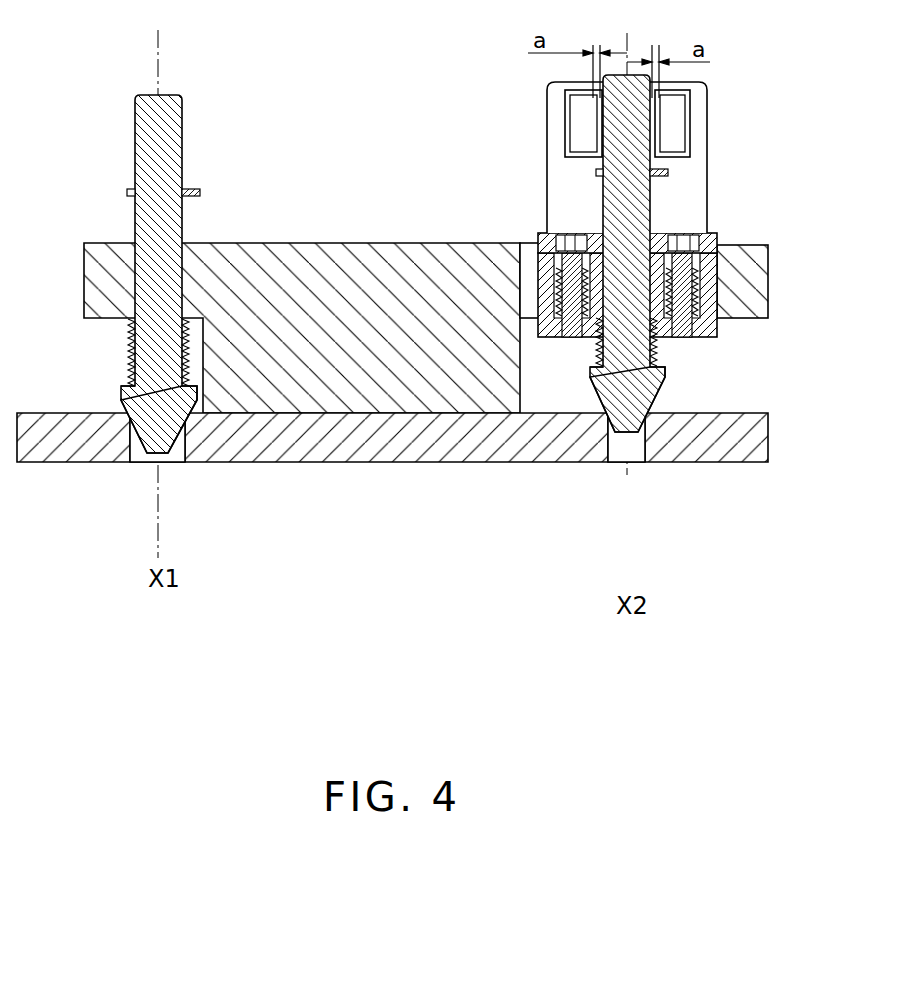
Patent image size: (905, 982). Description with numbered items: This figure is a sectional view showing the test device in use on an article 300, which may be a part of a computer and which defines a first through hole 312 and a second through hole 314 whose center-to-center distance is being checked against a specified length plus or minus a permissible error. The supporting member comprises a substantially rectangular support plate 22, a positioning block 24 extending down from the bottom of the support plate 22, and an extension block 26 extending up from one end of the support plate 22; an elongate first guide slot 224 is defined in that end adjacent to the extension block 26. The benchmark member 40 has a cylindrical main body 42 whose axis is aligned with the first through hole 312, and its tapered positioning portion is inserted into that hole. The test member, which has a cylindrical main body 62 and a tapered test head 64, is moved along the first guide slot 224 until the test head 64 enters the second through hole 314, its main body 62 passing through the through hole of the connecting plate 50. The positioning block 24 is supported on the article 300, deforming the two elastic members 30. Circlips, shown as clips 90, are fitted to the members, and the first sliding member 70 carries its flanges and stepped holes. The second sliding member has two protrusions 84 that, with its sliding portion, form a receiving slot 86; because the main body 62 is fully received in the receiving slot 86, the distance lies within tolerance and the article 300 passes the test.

The support plate 22 is at (97, 276).
The positioning block 24 is at (452, 400).
The first guide slot 224 is at (527, 252).
The extension block 26 is at (690, 205).
The elastic members 30 is at (128, 348).
The benchmark member 40 is at (140, 403).
The main body 42 is at (138, 130).
The connecting plate 50 is at (712, 333).
The main body 62 is at (617, 190).
The test head 64 is at (648, 402).
The first sliding member 70 is at (720, 252).
The protrusions 84 is at (675, 131).
The receiving slot 86 is at (655, 122).
The clips 90 is at (128, 192).
The article 300 is at (356, 465).
The first through hole 312 is at (177, 457).
The second through hole 314 is at (636, 456).